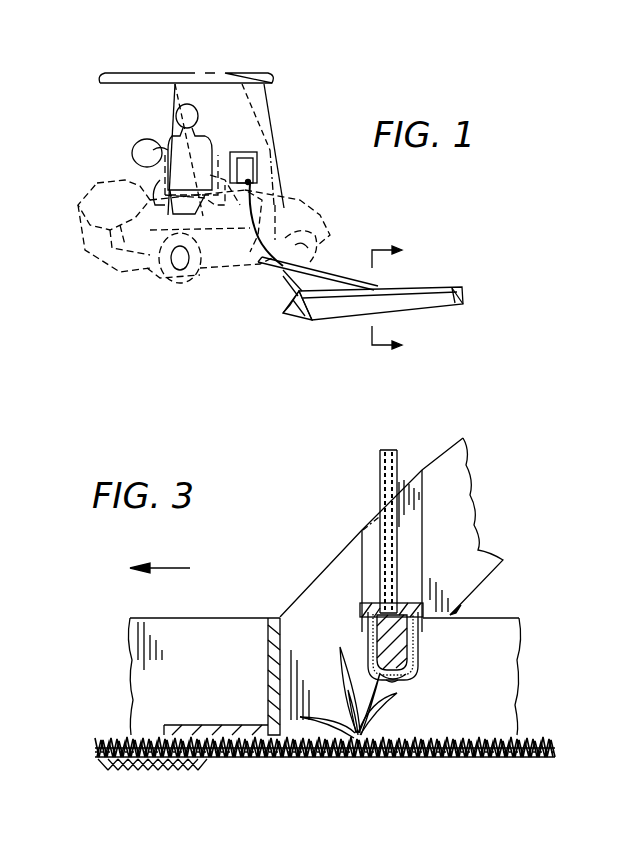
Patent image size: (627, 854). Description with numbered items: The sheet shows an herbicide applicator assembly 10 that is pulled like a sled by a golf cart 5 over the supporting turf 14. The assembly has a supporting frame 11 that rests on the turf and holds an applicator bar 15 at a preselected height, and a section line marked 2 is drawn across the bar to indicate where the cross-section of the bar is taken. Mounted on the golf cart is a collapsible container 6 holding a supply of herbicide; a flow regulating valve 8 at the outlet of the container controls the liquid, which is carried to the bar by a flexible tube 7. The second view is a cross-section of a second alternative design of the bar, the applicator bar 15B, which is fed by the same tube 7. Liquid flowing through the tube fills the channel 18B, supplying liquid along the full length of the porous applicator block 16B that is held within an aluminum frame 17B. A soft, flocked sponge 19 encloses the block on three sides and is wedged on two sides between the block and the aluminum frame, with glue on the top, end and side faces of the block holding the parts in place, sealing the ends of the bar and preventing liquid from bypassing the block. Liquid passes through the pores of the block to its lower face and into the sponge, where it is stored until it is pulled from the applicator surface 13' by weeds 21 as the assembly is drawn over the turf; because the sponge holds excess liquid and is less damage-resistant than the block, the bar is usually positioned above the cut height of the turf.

In FIG. 1, the golf cart 5 is at (298, 99).
In FIG. 1, the collapsible container 6 is at (243, 158).
In FIG. 1, the flow regulating valve 8 is at (250, 182).
In FIG. 1, the flexible tube 7 is at (300, 284).
In FIG. 3, the flexible tube 7 is at (380, 474).
In FIG. 1, the herbicide applicator assembly 10 is at (347, 327).
In FIG. 3, the herbicide applicator assembly 10 is at (323, 551).
In FIG. 1, the supporting frame 11 is at (290, 312).
In FIG. 1, the applicator bar 15 is at (329, 320).
In FIG. 1, the section line 2- 2 is at (394, 297).
In FIG. 3, the supporting turf 14 is at (531, 727).
In FIG. 3, the channel 18B is at (362, 612).
In FIG. 3, the aluminum frame 17B is at (418, 628).
In FIG. 3, the applicator block 16B is at (414, 652).
In FIG. 3, the flocked sponge 19 is at (405, 670).
In FIG. 3, the applicator bar 15B is at (428, 672).
In FIG. 3, the applicator surface 13' is at (409, 703).
In FIG. 3, the weeds 21 is at (340, 673).